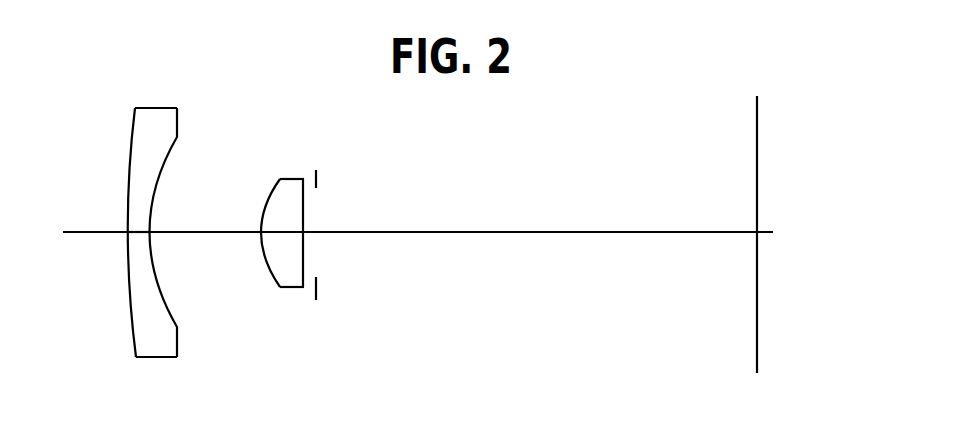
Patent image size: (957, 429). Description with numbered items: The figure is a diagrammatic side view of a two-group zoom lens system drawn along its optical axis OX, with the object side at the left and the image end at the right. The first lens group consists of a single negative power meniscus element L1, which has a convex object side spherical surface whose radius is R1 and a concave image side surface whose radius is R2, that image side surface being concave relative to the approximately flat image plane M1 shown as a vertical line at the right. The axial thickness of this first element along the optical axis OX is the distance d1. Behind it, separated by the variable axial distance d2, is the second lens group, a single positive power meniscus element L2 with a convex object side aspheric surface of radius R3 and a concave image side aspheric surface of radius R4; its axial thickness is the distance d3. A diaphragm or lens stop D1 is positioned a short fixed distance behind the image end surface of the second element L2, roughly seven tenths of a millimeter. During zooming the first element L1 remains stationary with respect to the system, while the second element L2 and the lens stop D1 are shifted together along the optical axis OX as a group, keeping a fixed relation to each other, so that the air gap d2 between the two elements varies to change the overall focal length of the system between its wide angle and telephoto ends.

The negative power meniscus element L1 is at (130, 211).
The positive power meniscus element L2 is at (318, 233).
The radius of curvature of surface S1 R1 is at (129, 278).
The radius of curvature of surface S2 R2 is at (158, 293).
The radius of curvature of surface S3 R3 is at (270, 273).
The radius of curvature of surface S4 R4 is at (303, 262).
The axial distance between surfaces S1 and S2 d1 is at (139, 232).
The axial distance between surfaces S2 and S3 d2 is at (200, 232).
The axial distance between surfaces S3 and S4 d3 is at (280, 232).
The lens stop D1 is at (322, 180).
The optical axis OX is at (537, 232).
The image plane M1 is at (757, 155).